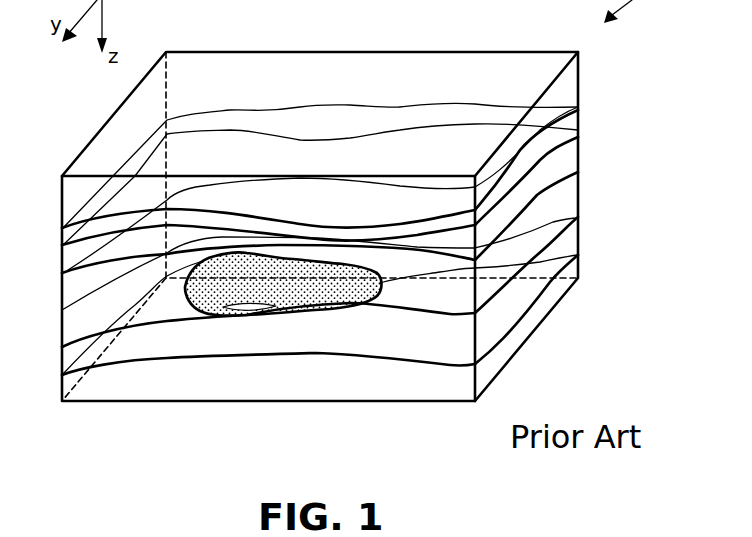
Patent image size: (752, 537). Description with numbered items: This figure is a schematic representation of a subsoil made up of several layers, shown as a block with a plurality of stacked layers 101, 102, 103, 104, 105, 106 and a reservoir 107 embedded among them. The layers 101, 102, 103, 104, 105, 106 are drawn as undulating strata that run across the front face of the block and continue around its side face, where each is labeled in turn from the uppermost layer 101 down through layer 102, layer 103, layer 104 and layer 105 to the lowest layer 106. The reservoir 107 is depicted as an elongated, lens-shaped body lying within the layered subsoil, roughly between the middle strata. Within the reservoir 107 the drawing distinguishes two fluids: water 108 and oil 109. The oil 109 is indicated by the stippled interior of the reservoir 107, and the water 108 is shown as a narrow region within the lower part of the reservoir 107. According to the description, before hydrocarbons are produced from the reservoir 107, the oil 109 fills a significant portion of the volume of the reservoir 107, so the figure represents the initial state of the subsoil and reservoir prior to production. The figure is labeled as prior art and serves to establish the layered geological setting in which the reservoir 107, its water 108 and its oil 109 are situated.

The layer 101 is at (560, 92).
The layer 102 is at (568, 127).
The layer 103 is at (562, 163).
The layer 104 is at (562, 198).
The layer 105 is at (568, 237).
The layer 106 is at (570, 268).
The reservoir 107 is at (218, 300).
The water 108 is at (250, 309).
The oil 109 is at (308, 288).